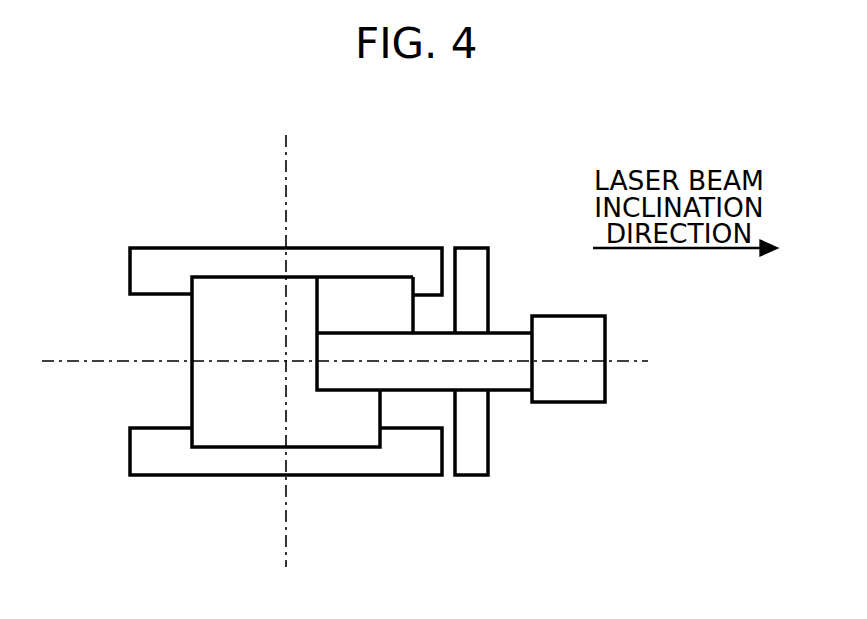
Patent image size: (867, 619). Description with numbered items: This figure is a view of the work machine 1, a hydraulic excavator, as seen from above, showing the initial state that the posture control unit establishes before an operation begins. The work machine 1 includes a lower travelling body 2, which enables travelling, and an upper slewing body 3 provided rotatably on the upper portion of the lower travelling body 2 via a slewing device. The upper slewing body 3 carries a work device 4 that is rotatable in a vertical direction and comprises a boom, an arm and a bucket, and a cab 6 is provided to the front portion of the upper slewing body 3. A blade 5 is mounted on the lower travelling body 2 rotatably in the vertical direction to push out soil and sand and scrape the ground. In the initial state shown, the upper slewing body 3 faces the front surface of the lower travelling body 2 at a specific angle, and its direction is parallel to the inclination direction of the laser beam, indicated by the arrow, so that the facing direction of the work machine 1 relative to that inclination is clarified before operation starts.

The work machine 1 is at (234, 230).
The lower travelling body 2 is at (347, 475).
The upper slewing body 3 is at (217, 333).
The work device 4 is at (502, 333).
The blade 5 is at (488, 423).
The cab 6 is at (350, 305).